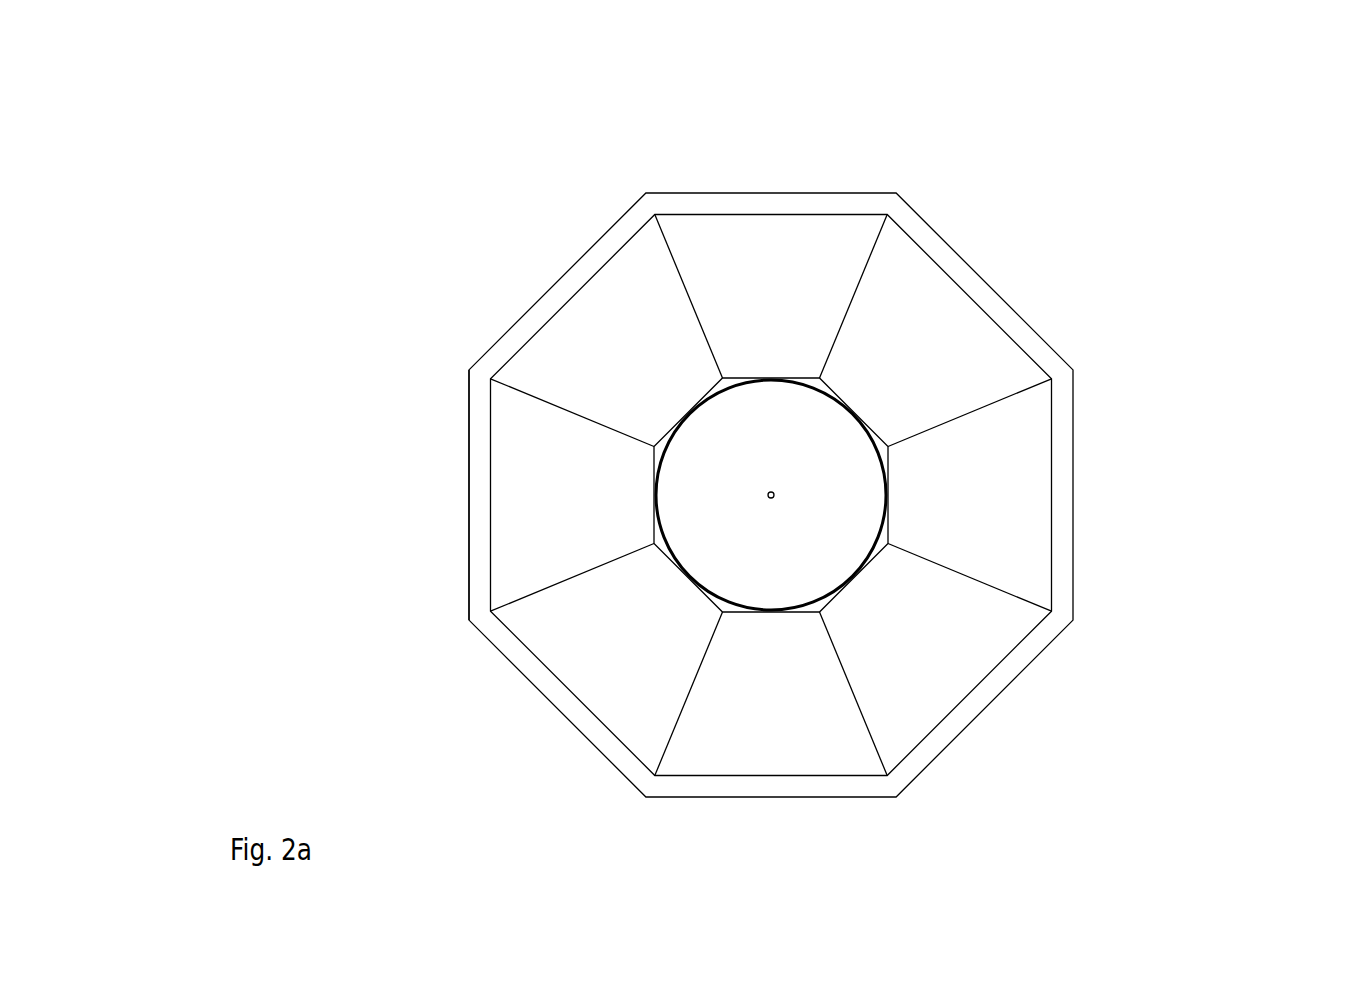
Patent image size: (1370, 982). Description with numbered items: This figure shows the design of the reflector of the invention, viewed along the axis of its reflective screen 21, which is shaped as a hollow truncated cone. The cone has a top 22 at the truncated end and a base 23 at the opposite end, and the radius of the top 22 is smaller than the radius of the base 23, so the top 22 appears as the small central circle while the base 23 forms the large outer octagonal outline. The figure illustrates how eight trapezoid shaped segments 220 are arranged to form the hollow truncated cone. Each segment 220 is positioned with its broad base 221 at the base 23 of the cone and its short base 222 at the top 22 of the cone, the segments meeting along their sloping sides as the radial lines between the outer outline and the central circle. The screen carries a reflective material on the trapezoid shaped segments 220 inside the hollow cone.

The reflective screen 21 is at (475, 278).
The top 22 is at (706, 394).
The base 23 is at (464, 462).
The trapezoid shaped segments 220 is at (905, 302).
The broad base 221 is at (977, 303).
The short base 222 is at (865, 418).